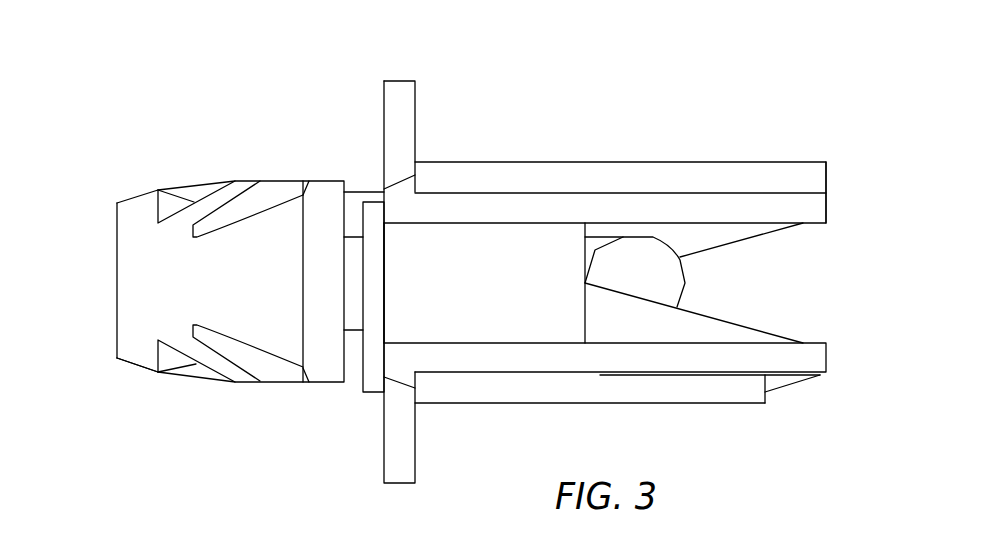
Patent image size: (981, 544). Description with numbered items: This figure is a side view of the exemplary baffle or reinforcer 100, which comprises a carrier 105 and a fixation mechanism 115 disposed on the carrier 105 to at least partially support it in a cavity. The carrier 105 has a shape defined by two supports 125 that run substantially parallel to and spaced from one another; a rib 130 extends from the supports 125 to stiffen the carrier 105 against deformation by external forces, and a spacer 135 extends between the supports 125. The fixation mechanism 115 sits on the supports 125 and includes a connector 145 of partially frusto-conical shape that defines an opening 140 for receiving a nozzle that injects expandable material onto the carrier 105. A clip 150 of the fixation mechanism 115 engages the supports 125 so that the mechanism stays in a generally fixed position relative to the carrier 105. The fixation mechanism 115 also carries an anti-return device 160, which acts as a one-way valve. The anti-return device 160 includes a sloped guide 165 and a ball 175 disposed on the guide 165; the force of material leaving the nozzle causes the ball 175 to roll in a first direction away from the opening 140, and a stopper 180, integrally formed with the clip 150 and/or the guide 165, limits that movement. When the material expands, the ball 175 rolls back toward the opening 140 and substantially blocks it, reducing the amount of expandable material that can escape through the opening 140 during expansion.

The baffle or reinforcer 100 is at (654, 108).
The carrier 105 is at (827, 208).
The fixation mechanism 115 is at (265, 409).
The supports 125 is at (513, 208).
The rib 130 is at (416, 102).
The spacer 135 is at (545, 327).
The opening 140 is at (90, 285).
The connector 145 is at (237, 180).
The clip 150 is at (792, 390).
The anti-return device 160 is at (754, 288).
The guide 165 is at (698, 330).
The ball 175 is at (672, 281).
The stopper 180 is at (708, 232).